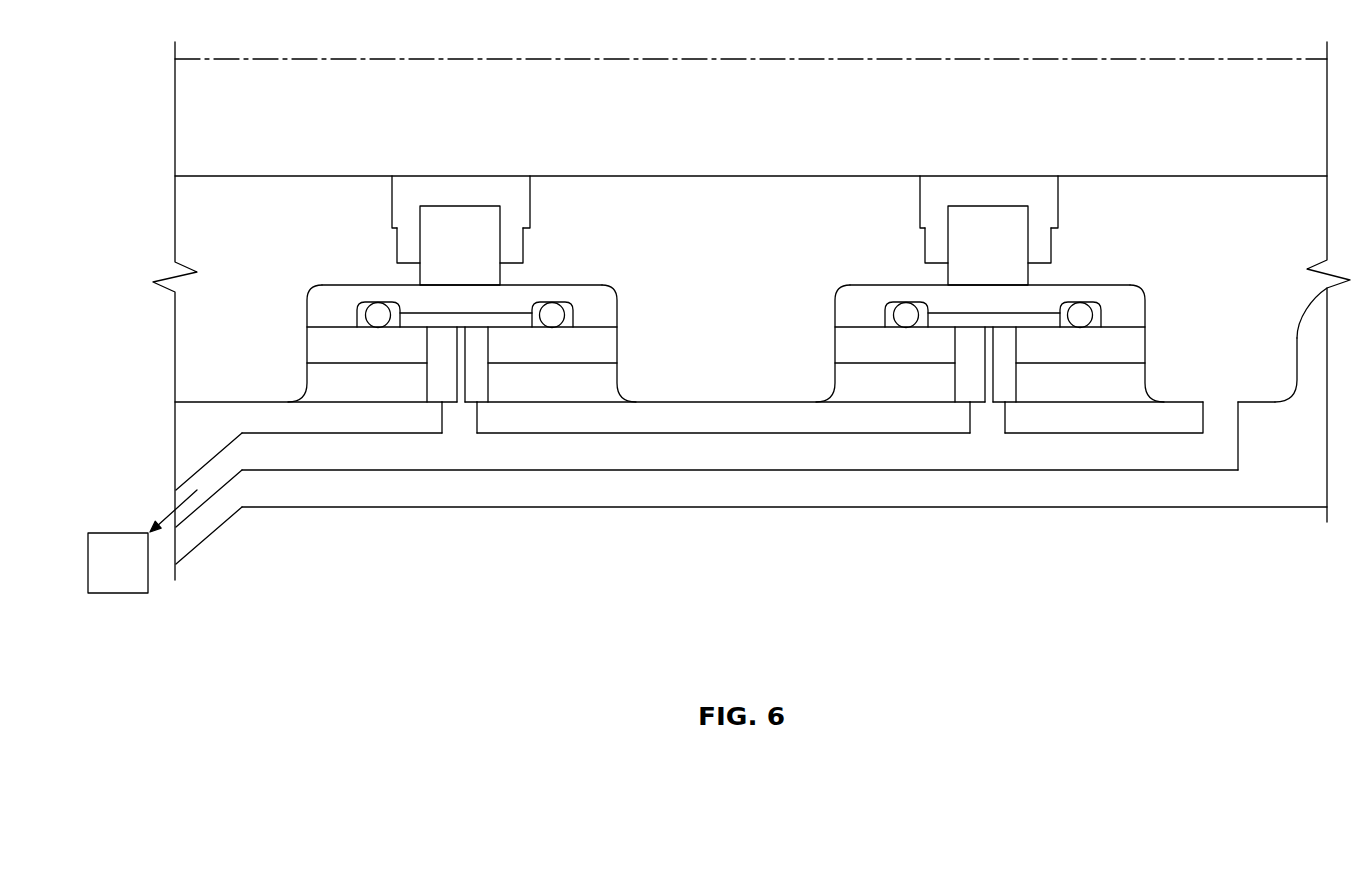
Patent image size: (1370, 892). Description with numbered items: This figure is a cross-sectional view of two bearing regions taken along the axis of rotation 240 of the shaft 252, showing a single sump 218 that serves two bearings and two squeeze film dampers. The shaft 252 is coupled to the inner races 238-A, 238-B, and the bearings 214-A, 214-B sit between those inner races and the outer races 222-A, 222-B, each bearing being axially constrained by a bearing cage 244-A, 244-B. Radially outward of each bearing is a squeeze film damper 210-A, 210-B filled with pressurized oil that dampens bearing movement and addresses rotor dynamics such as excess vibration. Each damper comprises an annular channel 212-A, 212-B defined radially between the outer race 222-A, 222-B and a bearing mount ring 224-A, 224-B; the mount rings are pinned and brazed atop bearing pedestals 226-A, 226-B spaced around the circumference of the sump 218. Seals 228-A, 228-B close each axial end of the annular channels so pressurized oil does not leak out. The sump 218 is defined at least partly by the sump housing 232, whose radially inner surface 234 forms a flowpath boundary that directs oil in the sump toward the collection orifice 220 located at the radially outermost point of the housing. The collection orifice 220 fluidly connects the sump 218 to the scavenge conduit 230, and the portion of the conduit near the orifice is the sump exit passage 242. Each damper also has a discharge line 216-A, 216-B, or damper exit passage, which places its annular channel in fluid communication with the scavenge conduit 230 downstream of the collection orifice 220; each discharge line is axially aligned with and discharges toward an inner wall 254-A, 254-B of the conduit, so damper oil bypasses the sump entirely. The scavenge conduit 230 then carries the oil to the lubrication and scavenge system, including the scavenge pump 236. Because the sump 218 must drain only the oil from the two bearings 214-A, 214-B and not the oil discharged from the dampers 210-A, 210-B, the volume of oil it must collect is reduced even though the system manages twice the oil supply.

The squeeze film damper 210-A is at (398, 300).
The squeeze film damper 210-B is at (1033, 299).
The annular channel 212-A is at (443, 315).
The annular channel 212-B is at (958, 313).
The bearing 214-A is at (442, 213).
The bearing 214-B is at (1008, 230).
The discharge line 216-A is at (453, 370).
The discharge line 216-B is at (981, 370).
The sump 218 is at (1245, 377).
The collection orifice 220 is at (1221, 420).
The outer race 222-A is at (600, 293).
The outer race 222-B is at (1148, 323).
The bearing mount ring 224-A is at (315, 345).
The bearing mount ring 224-B is at (845, 345).
The bearing pedestal 226-A is at (315, 385).
The bearing pedestal 226-B is at (845, 385).
The seal 228-A is at (552, 312).
The seal 228-B is at (1080, 315).
The scavenge conduit 230 is at (1055, 448).
The sump housing 232 is at (1301, 303).
The radially inner surface 234 is at (1288, 387).
The scavenge pump 236 is at (113, 583).
The inner race 238-A is at (420, 187).
The inner race 238-B is at (928, 193).
The axis of rotation 240 is at (437, 51).
The sump exit passage 242 is at (1250, 430).
The bearing cage 244-A is at (513, 242).
The bearing cage 244-B is at (1038, 243).
The shaft 252 is at (295, 152).
The inner wall 254-A is at (465, 461).
The inner wall 254-B is at (993, 461).